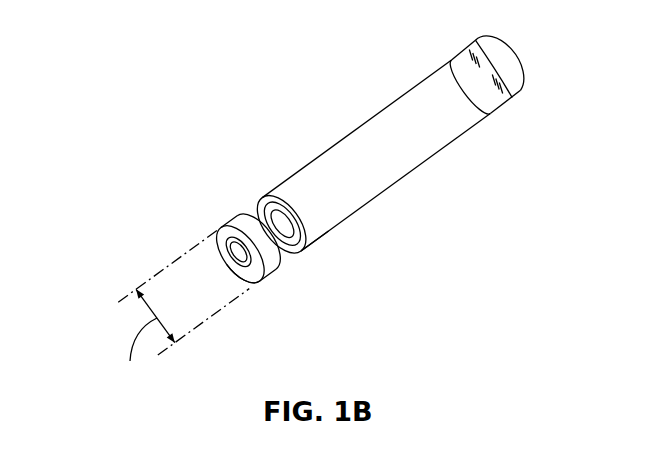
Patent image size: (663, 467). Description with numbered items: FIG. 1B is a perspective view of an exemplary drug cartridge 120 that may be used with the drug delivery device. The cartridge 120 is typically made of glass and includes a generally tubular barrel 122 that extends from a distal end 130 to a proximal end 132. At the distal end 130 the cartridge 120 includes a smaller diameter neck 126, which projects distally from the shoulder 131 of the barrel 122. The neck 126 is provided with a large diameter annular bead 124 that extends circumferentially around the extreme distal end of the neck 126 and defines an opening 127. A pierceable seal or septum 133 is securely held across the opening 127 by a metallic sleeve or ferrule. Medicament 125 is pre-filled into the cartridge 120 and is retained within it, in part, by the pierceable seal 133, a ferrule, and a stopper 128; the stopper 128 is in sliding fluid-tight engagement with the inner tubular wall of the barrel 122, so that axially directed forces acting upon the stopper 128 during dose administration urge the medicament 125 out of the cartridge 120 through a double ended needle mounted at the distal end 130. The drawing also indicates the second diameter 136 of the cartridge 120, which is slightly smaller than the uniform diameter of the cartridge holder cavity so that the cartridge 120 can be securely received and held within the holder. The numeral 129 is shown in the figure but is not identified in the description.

The cartridge 120 is at (319, 161).
The tubular barrel 122 is at (425, 162).
The annular bead 124 is at (262, 273).
The medicament 125 is at (370, 178).
The neck 126 is at (230, 200).
The opening 127 is at (225, 236).
The stopper 128 is at (464, 50).
The flange 129 is at (219, 251).
The distal end 130 is at (253, 192).
The shoulder 131 is at (295, 252).
The proximal end 132 is at (487, 67).
The pierceable seal 133 is at (238, 282).
The diameter D2 136 is at (128, 328).